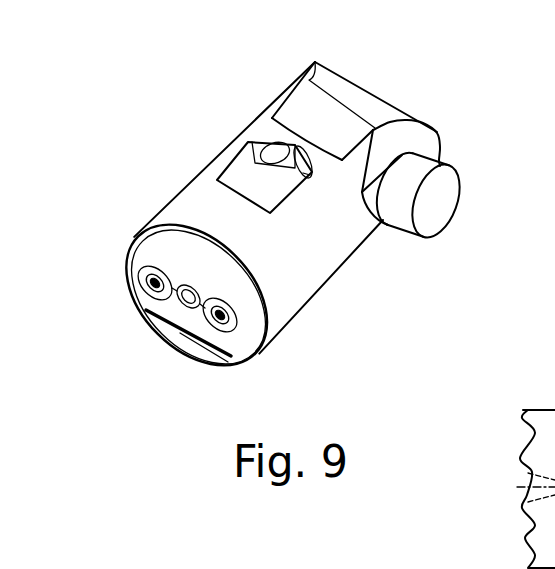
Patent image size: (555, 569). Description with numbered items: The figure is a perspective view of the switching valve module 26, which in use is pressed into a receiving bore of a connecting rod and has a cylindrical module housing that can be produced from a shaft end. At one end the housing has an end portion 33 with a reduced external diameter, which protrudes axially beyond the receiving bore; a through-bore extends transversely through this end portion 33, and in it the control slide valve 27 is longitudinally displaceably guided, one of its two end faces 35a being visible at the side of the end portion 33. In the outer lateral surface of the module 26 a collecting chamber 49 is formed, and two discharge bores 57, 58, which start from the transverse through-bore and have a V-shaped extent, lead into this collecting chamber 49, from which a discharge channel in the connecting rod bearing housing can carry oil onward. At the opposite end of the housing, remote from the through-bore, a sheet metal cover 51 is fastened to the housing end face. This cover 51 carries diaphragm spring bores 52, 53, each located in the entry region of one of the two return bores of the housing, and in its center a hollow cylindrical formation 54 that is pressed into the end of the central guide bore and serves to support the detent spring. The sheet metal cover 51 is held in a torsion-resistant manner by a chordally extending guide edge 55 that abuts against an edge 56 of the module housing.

The switching valve module 26 is at (410, 103).
The control slide valve 27 is at (430, 172).
The end portion 33 is at (405, 132).
The end face 35a is at (440, 207).
The collecting chamber 49 is at (245, 183).
The sheet metal cover 51 is at (162, 257).
The diaphragm spring bore 52 is at (142, 282).
The diaphragm spring bore 53 is at (244, 343).
The hollow cylindrical formation 54 is at (178, 295).
The guide edge 55 is at (178, 322).
The edge 56 is at (204, 348).
The discharge bore 57 is at (275, 150).
The discharge bore 58 is at (310, 166).